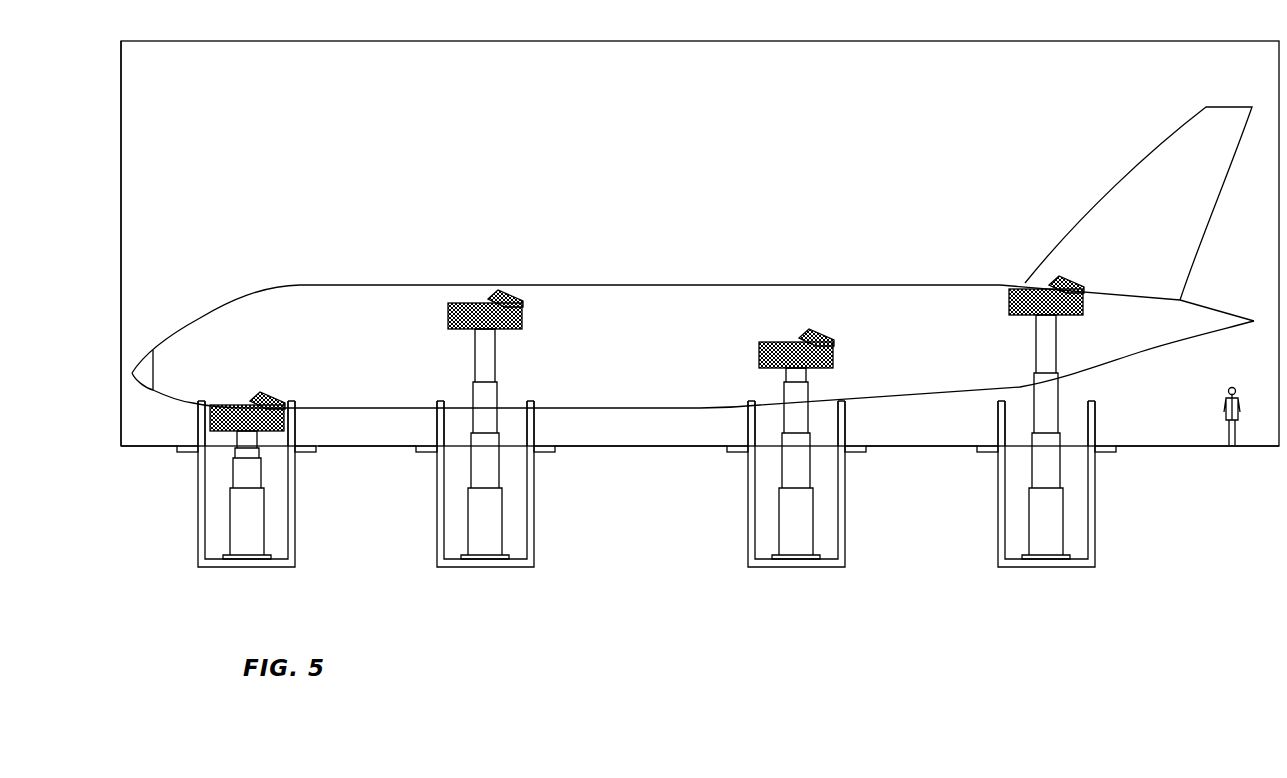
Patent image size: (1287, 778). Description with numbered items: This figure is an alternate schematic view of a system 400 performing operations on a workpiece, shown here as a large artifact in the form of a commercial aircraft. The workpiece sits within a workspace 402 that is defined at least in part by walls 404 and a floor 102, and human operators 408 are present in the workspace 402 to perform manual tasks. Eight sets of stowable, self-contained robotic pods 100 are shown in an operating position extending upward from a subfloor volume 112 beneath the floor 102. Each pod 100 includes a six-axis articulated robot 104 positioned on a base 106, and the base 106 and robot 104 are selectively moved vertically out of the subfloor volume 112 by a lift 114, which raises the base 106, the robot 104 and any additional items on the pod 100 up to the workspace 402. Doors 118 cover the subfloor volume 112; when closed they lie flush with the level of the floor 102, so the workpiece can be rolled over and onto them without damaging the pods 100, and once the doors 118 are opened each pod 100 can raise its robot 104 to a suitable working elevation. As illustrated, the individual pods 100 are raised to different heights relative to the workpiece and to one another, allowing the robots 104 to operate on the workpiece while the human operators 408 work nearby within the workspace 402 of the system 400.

The system 400 is at (328, 188).
The workspace 402 is at (641, 134).
The walls 404 is at (121, 202).
The human operators 408 is at (1235, 388).
The self-contained robotic pod 100 is at (688, 381).
The floor 102 is at (1193, 445).
The robot 104 is at (275, 395).
The base 106 is at (228, 405).
The subfloor volume 112 is at (218, 522).
The lift 114 is at (250, 507).
The doors 118 is at (198, 420).